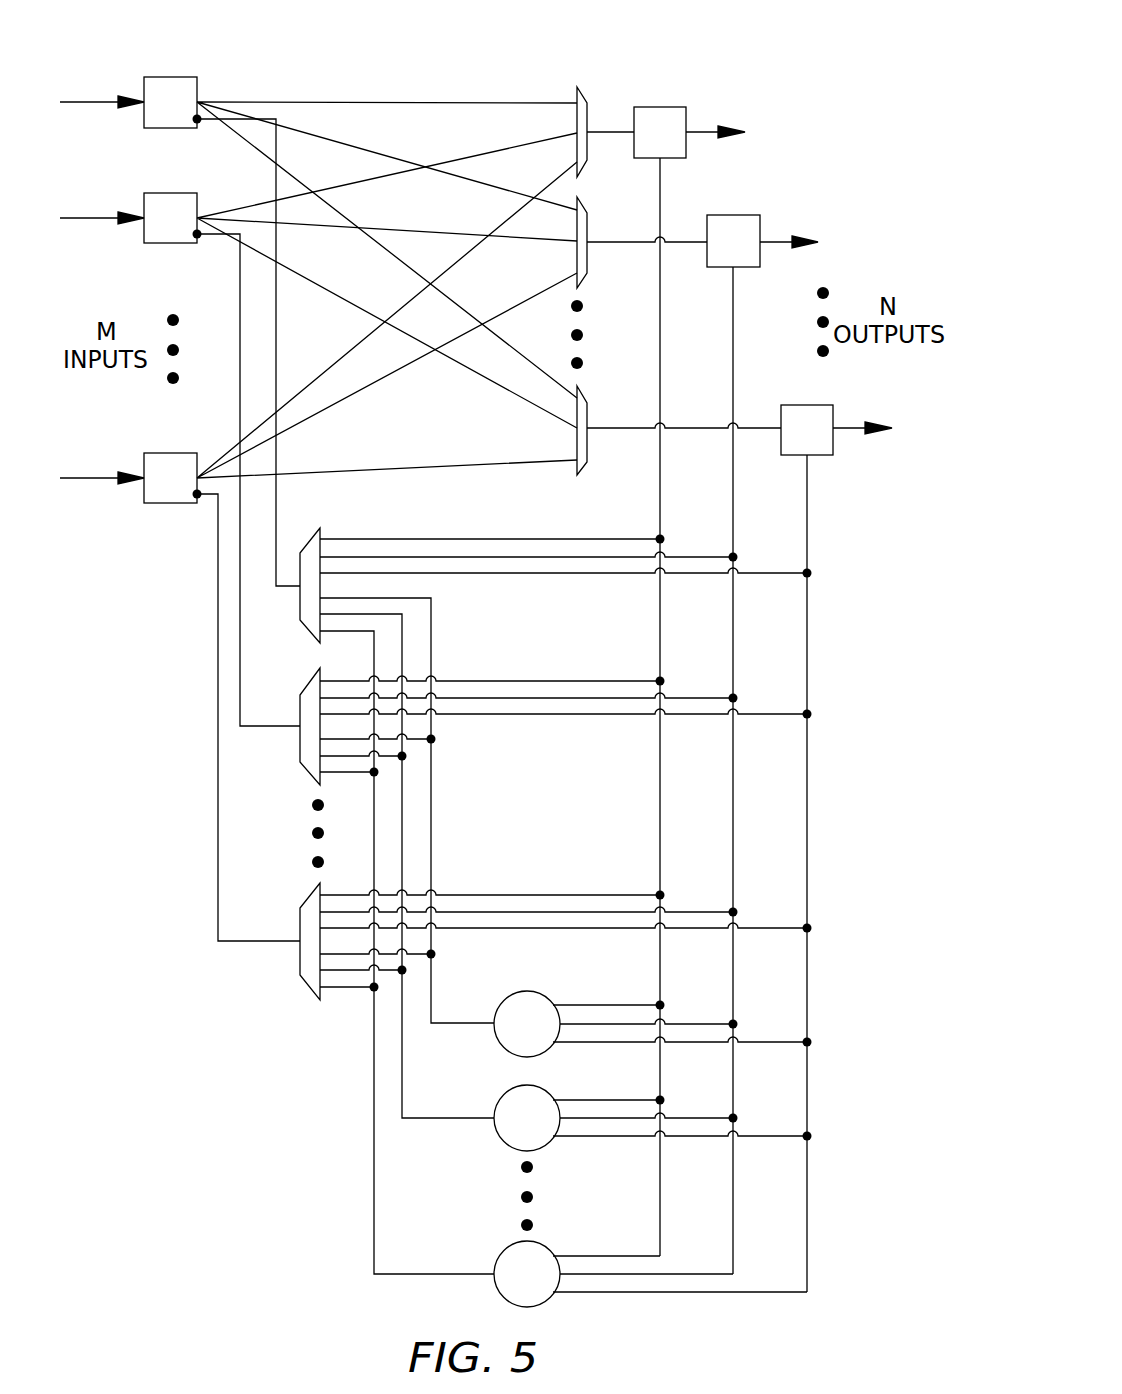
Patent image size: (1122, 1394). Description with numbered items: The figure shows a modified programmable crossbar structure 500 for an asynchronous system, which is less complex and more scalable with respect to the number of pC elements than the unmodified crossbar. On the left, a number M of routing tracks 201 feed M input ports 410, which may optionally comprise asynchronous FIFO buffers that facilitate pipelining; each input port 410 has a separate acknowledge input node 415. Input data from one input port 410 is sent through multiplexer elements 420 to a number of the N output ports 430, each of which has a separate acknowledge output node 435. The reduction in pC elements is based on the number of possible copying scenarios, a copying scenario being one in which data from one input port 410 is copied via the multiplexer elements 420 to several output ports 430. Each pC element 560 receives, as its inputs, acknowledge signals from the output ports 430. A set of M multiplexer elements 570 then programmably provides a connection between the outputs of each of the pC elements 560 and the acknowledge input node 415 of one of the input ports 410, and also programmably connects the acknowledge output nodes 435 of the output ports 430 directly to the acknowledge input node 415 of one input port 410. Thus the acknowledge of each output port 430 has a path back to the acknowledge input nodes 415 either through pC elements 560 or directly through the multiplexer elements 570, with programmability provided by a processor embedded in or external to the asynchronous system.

The modified programmable crossbar structure 500 is at (755, 44).
The routing tracks 201 is at (100, 101).
The input ports 410 is at (160, 77).
The acknowledge input nodes 415 is at (200, 123).
The multiplexer elements 420 is at (580, 95).
The output ports 430 is at (670, 107).
The acknowledge output nodes 435 is at (661, 160).
The multiplexer elements 570 is at (303, 626).
The pC elements 560 is at (548, 1000).